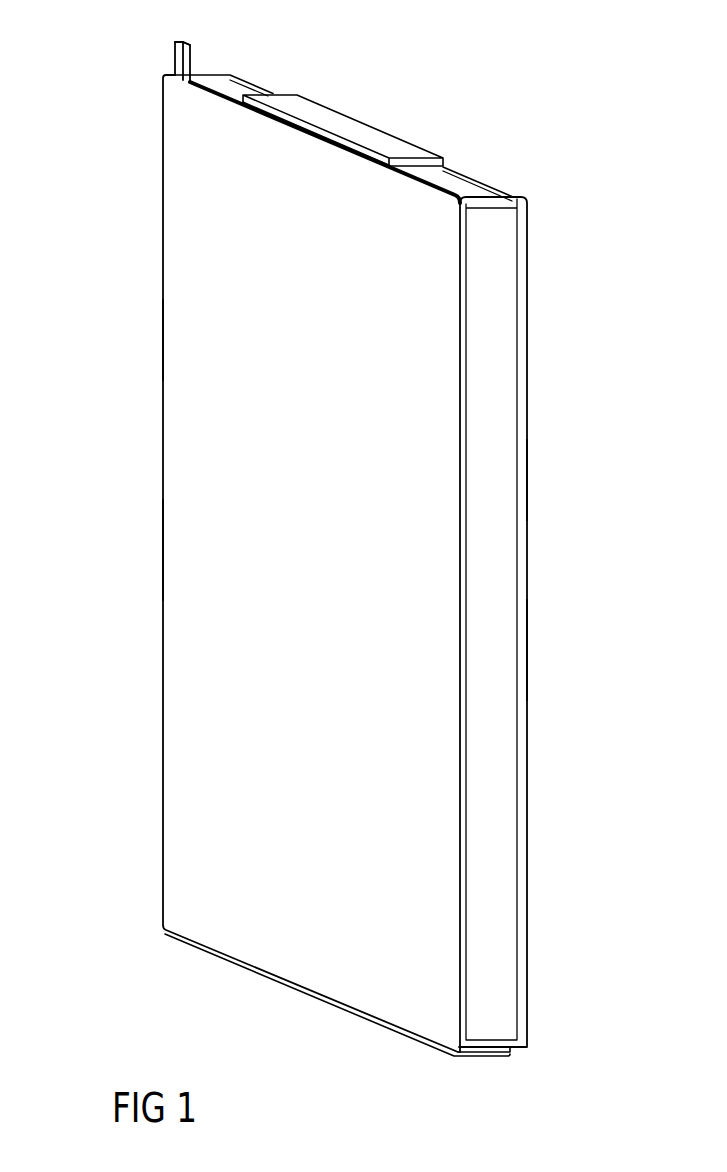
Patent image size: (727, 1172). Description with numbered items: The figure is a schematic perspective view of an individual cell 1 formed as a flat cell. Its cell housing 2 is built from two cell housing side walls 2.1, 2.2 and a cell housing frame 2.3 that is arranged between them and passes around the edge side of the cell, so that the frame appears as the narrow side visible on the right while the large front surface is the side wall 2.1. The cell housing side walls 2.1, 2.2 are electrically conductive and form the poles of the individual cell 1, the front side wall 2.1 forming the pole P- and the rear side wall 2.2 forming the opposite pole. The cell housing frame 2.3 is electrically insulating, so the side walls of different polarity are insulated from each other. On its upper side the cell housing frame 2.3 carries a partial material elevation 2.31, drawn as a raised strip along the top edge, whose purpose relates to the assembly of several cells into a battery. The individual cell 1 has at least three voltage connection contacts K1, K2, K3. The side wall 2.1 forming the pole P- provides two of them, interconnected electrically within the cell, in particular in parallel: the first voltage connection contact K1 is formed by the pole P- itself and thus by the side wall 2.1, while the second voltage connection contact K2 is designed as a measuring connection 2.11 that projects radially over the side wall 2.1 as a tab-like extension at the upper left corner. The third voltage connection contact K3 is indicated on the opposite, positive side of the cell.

The individual cell 1 is at (625, 48).
The cell housing 2 is at (518, 1028).
The cell housing side wall 2.1 is at (182, 458).
The cell housing side wall 2.2 is at (530, 410).
The cell housing frame 2.3 is at (503, 542).
The measuring connection 2.11 is at (173, 60).
The partial material elevation 2.31 is at (340, 122).
The first voltage connection contact K1 is at (182, 543).
The second voltage connection contact K2 is at (179, 50).
The third voltage connection contact K3 is at (523, 633).
The pole P- is at (182, 342).